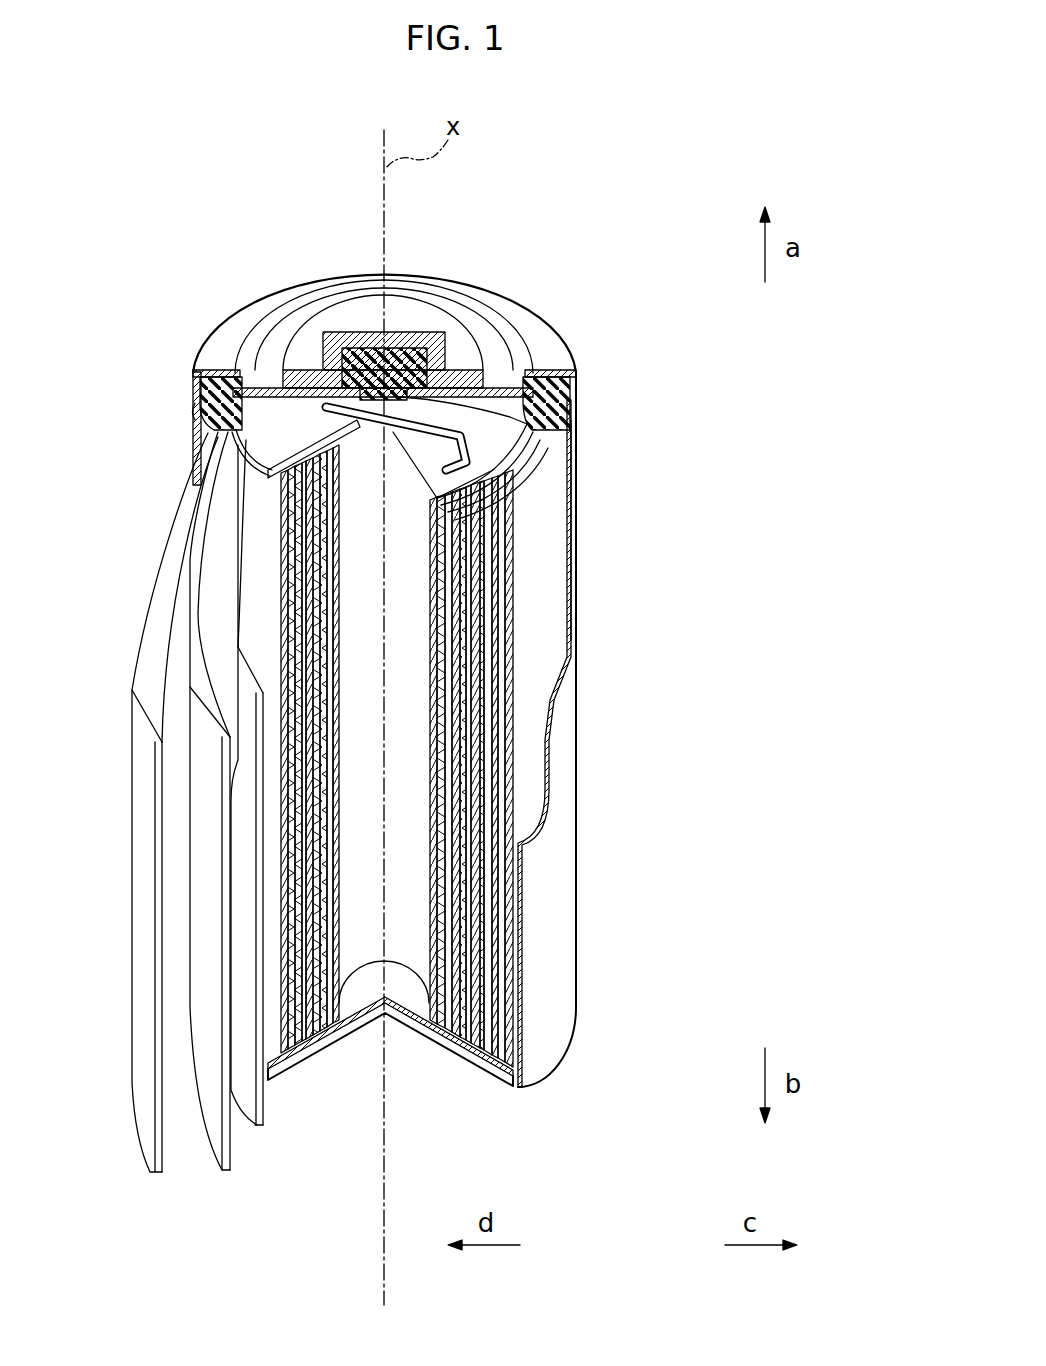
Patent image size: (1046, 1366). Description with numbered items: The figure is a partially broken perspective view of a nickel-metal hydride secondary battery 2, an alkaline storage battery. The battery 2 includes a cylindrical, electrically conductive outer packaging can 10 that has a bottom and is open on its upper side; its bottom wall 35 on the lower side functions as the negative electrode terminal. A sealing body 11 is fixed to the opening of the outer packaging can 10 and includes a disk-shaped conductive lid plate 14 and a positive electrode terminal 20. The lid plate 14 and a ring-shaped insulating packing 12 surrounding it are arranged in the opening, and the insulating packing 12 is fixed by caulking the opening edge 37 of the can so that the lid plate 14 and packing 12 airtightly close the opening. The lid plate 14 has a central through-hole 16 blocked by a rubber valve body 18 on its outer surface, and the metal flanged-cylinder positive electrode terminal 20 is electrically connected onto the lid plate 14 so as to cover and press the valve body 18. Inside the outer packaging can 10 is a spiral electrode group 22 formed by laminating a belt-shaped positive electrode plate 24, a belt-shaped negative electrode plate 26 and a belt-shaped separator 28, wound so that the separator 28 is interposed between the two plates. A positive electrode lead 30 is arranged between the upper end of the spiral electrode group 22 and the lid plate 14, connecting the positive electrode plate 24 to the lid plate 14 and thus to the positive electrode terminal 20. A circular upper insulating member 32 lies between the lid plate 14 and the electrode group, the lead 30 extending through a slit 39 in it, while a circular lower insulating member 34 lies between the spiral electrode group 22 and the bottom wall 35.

The nickel-metal hydride secondary battery 2 is at (546, 280).
The outer packaging can 10 is at (570, 716).
The sealing body 11 is at (497, 355).
The insulating packing 12 is at (208, 403).
The lid plate 14 is at (270, 358).
The central through-hole 16 is at (570, 390).
The valve body 18 is at (358, 342).
The positive electrode terminal 20 is at (403, 308).
The spiral electrode group 22 is at (546, 610).
The positive electrode plate 24 is at (263, 1125).
The negative electrode plate 26 is at (163, 1165).
The separator 28 is at (232, 1160).
The positive electrode lead 30 is at (530, 436).
The upper insulating member 32 is at (500, 458).
The lower insulating member 34 is at (405, 1000).
The bottom wall 35 is at (345, 1040).
The opening edge 37 is at (555, 345).
The slit 39 is at (510, 470).